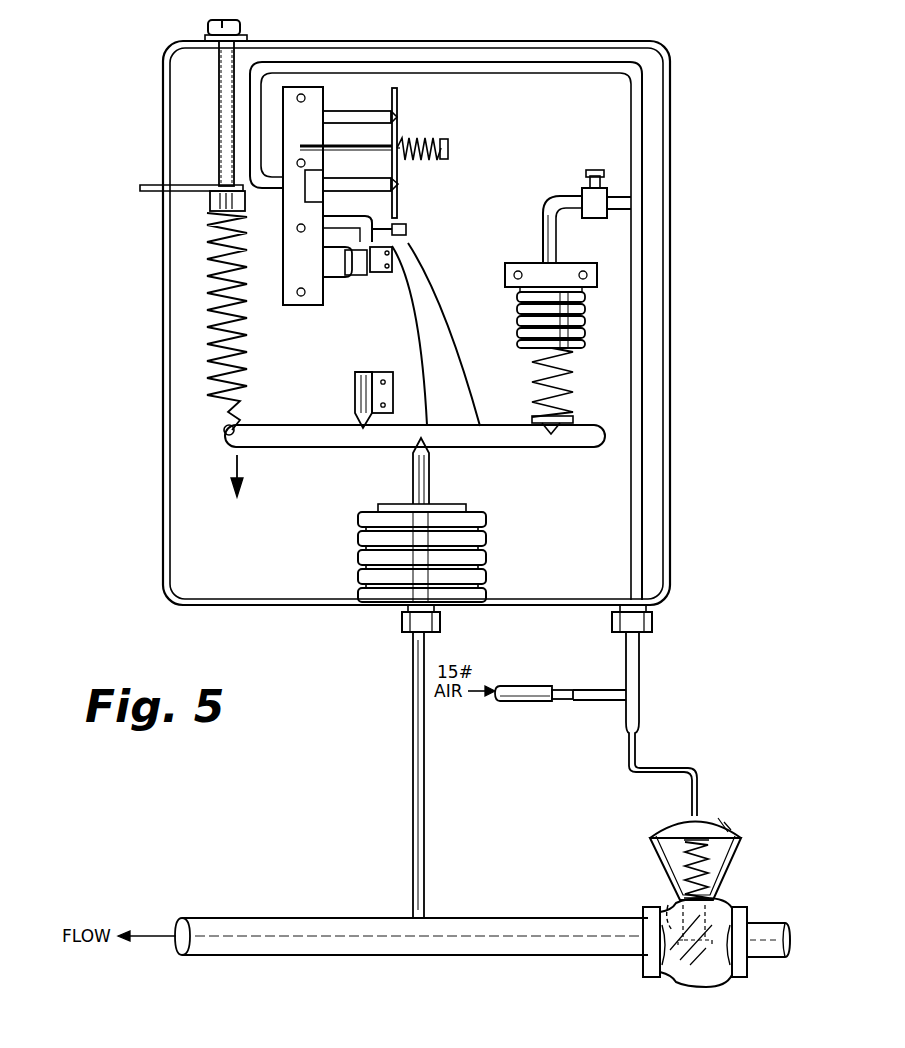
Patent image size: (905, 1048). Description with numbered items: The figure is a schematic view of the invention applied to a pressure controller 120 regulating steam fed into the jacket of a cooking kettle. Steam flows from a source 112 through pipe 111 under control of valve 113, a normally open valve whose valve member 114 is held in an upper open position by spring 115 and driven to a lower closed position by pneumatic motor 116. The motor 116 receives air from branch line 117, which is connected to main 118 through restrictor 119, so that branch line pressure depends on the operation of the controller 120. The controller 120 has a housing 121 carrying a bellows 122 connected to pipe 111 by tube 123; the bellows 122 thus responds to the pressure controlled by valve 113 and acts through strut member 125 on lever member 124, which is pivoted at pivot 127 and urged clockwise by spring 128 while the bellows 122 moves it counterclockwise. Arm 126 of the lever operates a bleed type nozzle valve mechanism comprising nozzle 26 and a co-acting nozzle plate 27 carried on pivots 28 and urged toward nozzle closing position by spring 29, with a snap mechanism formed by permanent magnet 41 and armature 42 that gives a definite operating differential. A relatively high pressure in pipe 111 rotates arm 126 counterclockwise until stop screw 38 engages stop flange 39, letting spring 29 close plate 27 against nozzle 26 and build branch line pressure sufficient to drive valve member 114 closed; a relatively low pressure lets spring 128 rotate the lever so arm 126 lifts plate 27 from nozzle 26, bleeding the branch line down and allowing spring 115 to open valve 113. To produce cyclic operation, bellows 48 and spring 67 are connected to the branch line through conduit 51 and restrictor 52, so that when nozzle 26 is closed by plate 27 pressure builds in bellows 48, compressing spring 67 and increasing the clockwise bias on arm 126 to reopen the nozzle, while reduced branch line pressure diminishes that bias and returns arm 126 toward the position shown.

The nozzle valve member 26 is at (368, 179).
The nozzle plate 27 is at (397, 176).
The pivots 28 is at (378, 112).
The spring 29 is at (428, 137).
The stop screw 38 is at (406, 227).
The stop flange 39 is at (368, 232).
The permanent magnet 41 is at (352, 266).
The armature 42 is at (377, 272).
The bellows 48 is at (517, 306).
The conduit 51 is at (556, 200).
The restrictor 52 is at (589, 184).
The spring 67 is at (536, 381).
The pipe 111 is at (352, 945).
The source 112 is at (765, 957).
The valve 113 is at (660, 983).
The valve member 114 is at (664, 905).
The spring 115 is at (710, 862).
The pneumatic motor 116 is at (714, 822).
The branch line 117 is at (640, 697).
The main 118 is at (521, 702).
The restrictor 119 is at (570, 702).
The pressure controller 120 is at (687, 315).
The housing 121 is at (175, 528).
The bellows 122 is at (488, 560).
The tube 123 is at (414, 788).
The lever member 124 is at (512, 452).
The strut member 125 is at (429, 484).
The arm 126 is at (424, 346).
The pivot 127 is at (357, 422).
The spring 128 is at (240, 342).